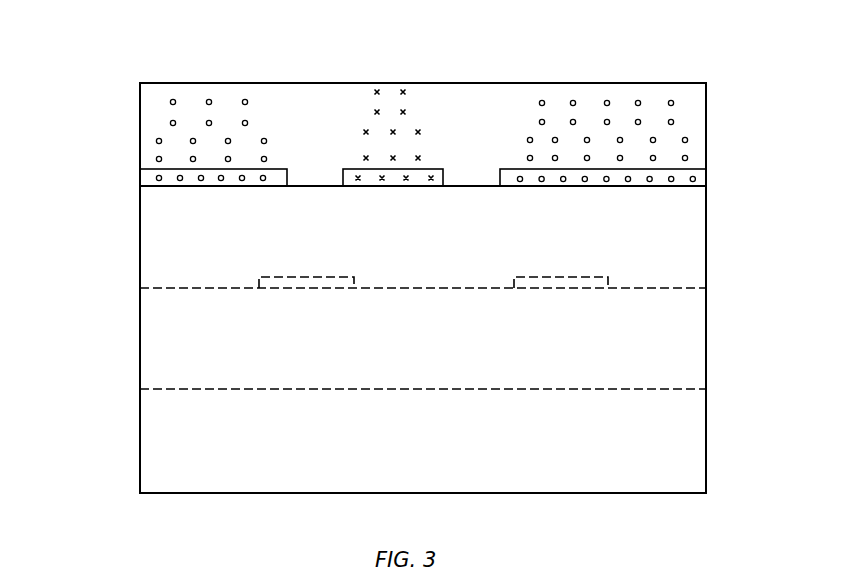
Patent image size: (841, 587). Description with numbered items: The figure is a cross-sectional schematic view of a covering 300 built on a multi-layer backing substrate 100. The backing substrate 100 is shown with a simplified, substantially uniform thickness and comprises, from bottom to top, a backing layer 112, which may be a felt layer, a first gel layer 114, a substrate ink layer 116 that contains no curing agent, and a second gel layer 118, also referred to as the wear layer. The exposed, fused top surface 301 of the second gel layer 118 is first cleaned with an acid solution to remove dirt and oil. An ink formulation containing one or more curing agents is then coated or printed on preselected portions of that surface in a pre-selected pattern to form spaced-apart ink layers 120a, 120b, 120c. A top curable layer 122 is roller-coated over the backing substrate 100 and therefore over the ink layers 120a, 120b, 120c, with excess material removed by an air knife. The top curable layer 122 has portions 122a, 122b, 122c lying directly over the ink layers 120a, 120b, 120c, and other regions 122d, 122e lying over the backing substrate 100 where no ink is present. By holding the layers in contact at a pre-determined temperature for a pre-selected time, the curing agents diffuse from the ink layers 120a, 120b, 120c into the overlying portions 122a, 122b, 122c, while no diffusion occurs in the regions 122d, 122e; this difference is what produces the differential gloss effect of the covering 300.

The backing substrate 100 is at (715, 188).
The backing layer 112 is at (376, 409).
The first gel layer 114 is at (374, 306).
The substrate ink layer 116 is at (423, 262).
The second gel layer 118 is at (377, 208).
The ink layer 120a is at (213, 198).
The ink layer 120b is at (410, 196).
The ink layer 120c is at (647, 157).
The top curable layer 122 is at (422, 122).
The portion of top curable layer 122a is at (234, 90).
The portion of top curable layer 122b is at (437, 93).
The portion of top curable layer 122c is at (661, 121).
The region of top curable layer 122d is at (345, 112).
The region of top curable layer 122e is at (505, 119).
The covering 300 is at (429, 295).
The top surface 301 is at (466, 172).